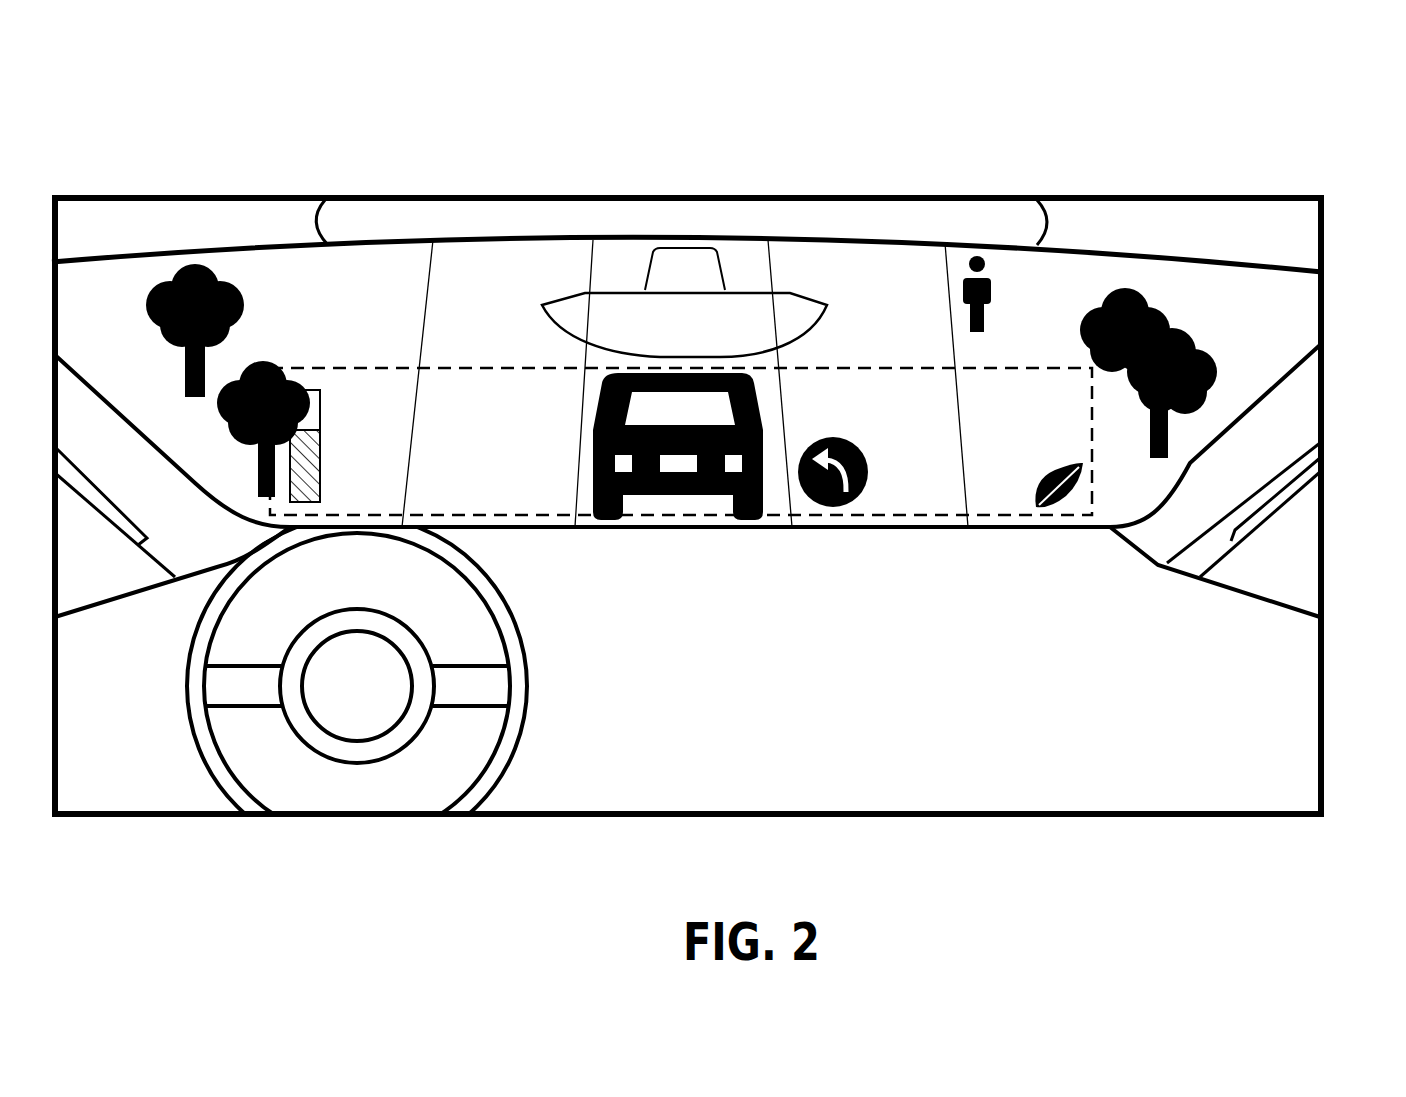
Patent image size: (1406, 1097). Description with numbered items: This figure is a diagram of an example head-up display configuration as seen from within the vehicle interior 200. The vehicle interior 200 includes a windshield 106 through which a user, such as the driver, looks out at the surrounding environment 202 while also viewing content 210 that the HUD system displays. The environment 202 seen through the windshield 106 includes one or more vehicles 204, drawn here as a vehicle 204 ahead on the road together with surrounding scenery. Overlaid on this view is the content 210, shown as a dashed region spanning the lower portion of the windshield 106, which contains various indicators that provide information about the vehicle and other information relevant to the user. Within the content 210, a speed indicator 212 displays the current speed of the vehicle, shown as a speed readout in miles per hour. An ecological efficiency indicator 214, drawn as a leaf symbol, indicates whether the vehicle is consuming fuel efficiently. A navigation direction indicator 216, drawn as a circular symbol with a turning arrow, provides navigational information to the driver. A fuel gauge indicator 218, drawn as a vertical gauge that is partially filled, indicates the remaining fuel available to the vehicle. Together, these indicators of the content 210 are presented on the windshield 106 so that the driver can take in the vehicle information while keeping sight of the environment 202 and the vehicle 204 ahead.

The vehicle interior 200 is at (1268, 74).
The windshield 106 is at (1288, 265).
The environment 202 is at (1065, 288).
The vehicle 204 is at (743, 515).
The content 210 is at (343, 370).
The speed indicator 212 is at (1030, 370).
The ecological efficiency indicator 214 is at (1047, 502).
The navigation direction indicator 216 is at (833, 508).
The fuel gauge indicator 218 is at (321, 446).